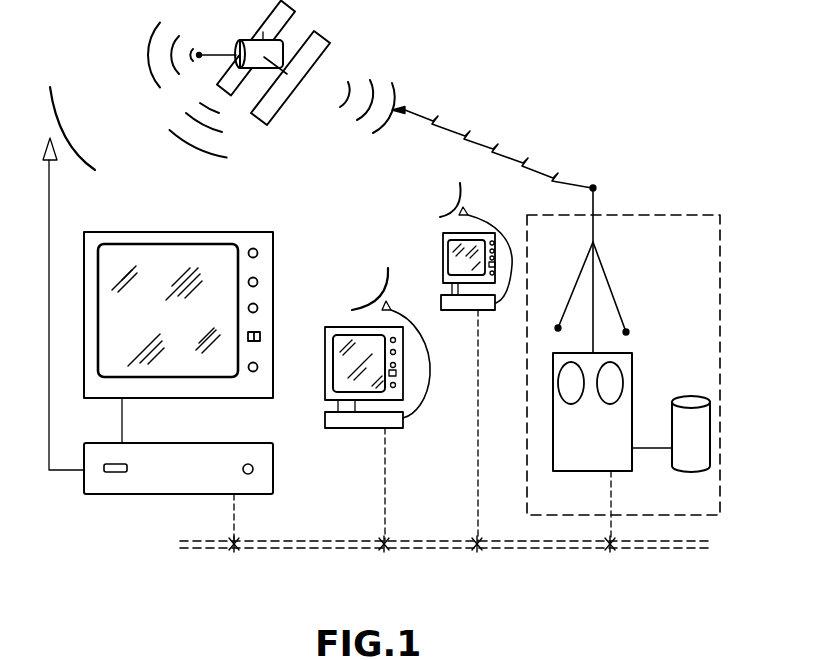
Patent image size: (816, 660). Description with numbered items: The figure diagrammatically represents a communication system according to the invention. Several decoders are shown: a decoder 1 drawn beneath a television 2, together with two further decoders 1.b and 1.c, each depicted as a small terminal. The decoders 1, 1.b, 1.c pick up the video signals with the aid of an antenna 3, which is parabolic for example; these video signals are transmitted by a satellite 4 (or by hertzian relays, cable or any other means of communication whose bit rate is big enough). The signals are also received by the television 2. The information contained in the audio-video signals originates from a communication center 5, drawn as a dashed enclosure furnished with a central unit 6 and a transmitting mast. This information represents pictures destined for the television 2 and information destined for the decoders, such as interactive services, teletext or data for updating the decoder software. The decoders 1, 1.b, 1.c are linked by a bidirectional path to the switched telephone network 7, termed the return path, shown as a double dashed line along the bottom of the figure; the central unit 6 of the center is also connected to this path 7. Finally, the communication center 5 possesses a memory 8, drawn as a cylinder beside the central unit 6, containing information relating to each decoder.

The decoder 1 is at (262, 482).
The television 2 is at (266, 268).
The antenna 3 is at (50, 106).
The satellite 4 is at (318, 33).
The communication center 5 is at (665, 214).
The central unit 6 is at (553, 420).
The switched telephone network 7 is at (523, 546).
The memory 8 is at (687, 472).
The decoder 1.b is at (393, 430).
The decoder 1.c is at (492, 312).